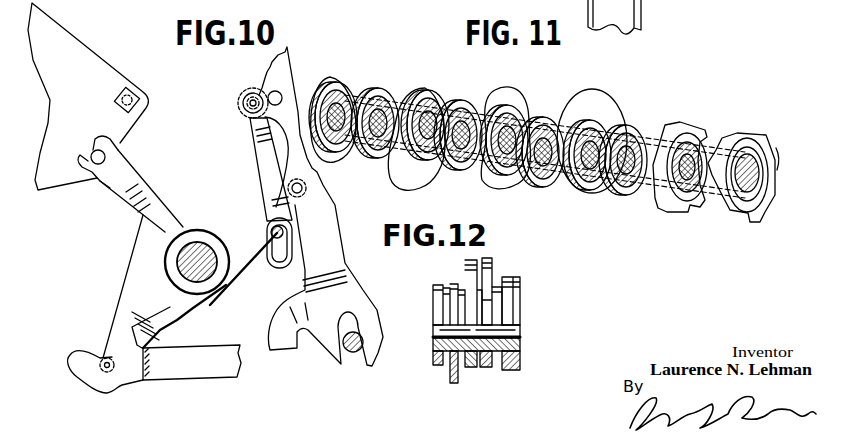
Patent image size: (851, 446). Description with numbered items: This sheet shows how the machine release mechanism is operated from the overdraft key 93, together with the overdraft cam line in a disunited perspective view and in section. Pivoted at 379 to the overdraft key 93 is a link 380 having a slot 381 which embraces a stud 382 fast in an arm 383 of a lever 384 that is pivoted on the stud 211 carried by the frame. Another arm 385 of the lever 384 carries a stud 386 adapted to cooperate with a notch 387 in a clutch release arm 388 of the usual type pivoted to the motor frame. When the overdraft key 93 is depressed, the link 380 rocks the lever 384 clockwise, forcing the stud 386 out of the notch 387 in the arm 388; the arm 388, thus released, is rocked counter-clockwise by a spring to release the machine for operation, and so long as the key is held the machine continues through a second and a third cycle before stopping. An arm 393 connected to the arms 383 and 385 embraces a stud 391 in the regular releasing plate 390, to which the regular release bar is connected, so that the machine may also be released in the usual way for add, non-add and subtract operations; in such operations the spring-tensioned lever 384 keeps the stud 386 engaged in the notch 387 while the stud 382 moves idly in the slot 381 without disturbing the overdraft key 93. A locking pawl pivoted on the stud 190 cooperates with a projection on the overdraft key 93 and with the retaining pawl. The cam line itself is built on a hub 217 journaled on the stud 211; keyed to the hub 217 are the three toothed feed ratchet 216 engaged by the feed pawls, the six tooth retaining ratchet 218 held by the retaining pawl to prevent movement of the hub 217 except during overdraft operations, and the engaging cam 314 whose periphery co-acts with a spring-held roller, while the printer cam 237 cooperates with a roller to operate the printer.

In FIG. 10, the regular releasing plate 390 is at (78, 58).
In FIG. 10, the stud 391 is at (76, 143).
In FIG. 10, the arm 393 is at (125, 176).
In FIG. 10, the overdraft key 93 is at (270, 82).
In FIG. 10, the pivot 379 is at (244, 99).
In FIG. 10, the link 380 is at (262, 157).
In FIG. 10, the stud 211 is at (186, 248).
In FIG. 11, the stud 211 is at (756, 166).
In FIG. 10, the stud 382 is at (272, 234).
In FIG. 10, the slot 381 is at (286, 250).
In FIG. 10, the arm 383 is at (246, 258).
In FIG. 10, the lever 384 is at (225, 286).
In FIG. 10, the arm 385 is at (155, 290).
In FIG. 10, the stud 386 is at (106, 358).
In FIG. 10, the notch 387 is at (108, 372).
In FIG. 10, the clutch release arm 388 is at (182, 350).
In FIG. 10, the stud 190 is at (368, 360).
In FIG. 11, the printer cam 237 is at (441, 68).
In FIG. 12, the printer cam 237 is at (450, 367).
In FIG. 11, the engaging cam 314 is at (577, 103).
In FIG. 12, the engaging cam 314 is at (487, 260).
In FIG. 11, the retaining ratchet 218 is at (693, 130).
In FIG. 12, the retaining ratchet 218 is at (503, 370).
In FIG. 11, the hub 217 is at (733, 157).
In FIG. 12, the hub 217 is at (495, 368).
In FIG. 11, the feed ratchet 216 is at (762, 213).
In FIG. 12, the feed ratchet 216 is at (517, 300).